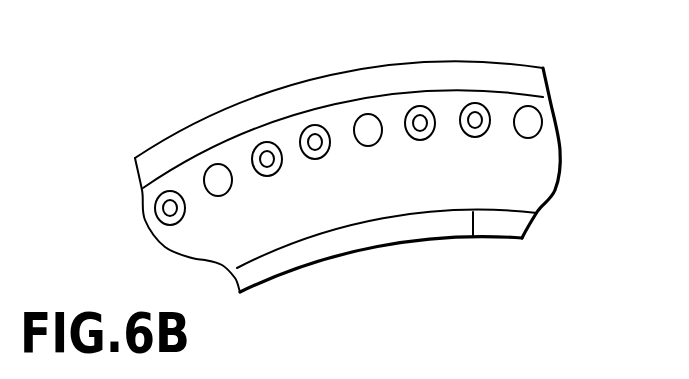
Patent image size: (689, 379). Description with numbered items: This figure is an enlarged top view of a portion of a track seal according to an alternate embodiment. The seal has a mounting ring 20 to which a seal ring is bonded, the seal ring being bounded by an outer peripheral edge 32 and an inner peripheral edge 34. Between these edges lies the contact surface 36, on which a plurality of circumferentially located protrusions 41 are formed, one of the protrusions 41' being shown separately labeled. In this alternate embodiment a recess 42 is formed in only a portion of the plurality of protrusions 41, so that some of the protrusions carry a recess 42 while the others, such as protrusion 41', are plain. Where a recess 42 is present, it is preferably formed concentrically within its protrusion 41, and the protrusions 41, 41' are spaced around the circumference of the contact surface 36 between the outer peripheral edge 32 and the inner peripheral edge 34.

The mounting ring 20 is at (500, 62).
The outer peripheral edge 32 is at (508, 90).
The inner peripheral edge 34 is at (473, 237).
The contact surface 36 is at (540, 118).
The protrusions 41 is at (545, 142).
The protrusion 41' is at (352, 156).
The recess 42 is at (470, 134).